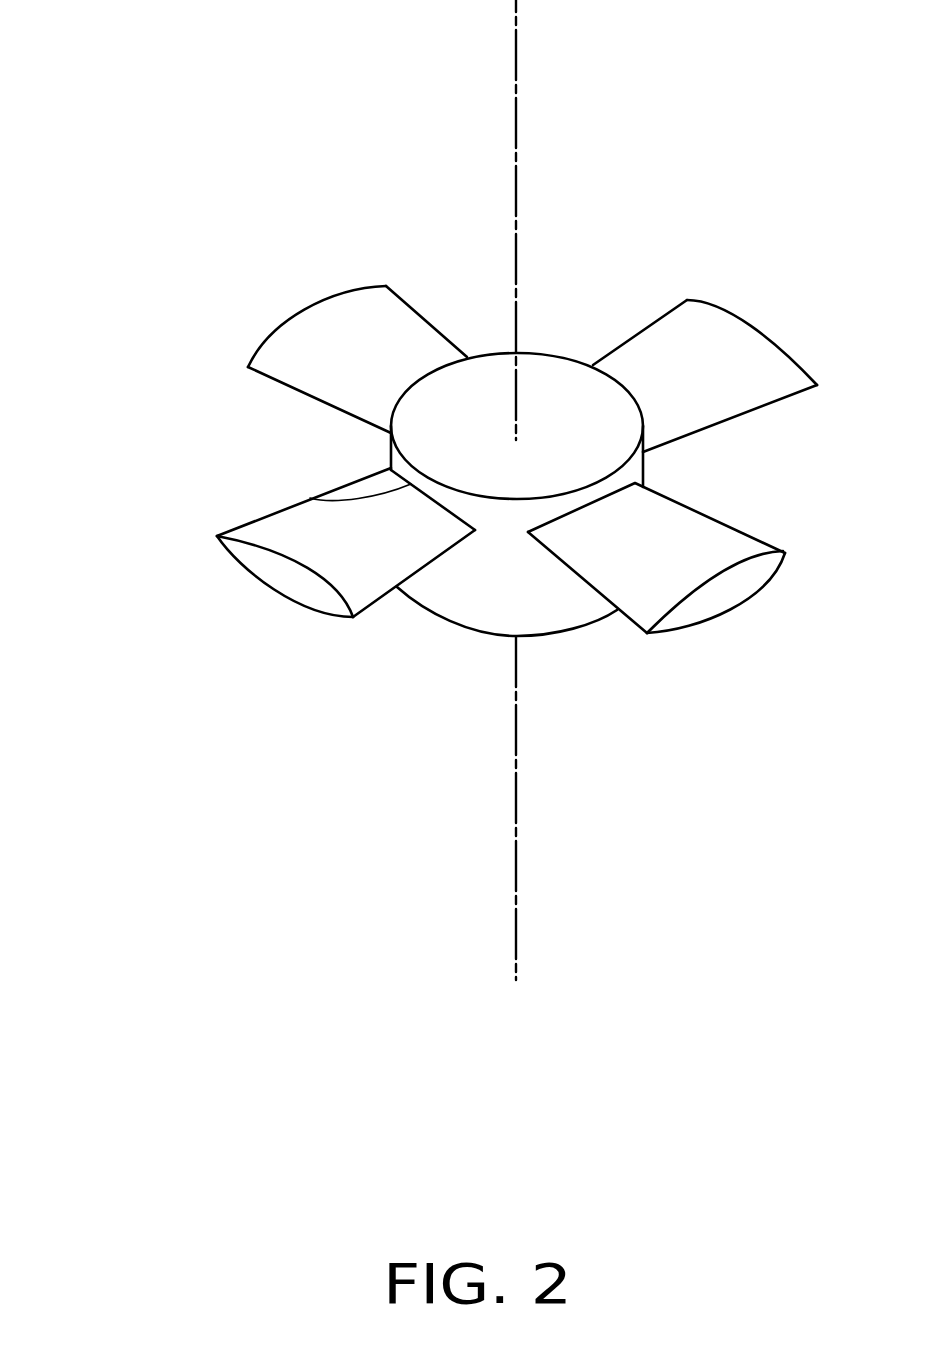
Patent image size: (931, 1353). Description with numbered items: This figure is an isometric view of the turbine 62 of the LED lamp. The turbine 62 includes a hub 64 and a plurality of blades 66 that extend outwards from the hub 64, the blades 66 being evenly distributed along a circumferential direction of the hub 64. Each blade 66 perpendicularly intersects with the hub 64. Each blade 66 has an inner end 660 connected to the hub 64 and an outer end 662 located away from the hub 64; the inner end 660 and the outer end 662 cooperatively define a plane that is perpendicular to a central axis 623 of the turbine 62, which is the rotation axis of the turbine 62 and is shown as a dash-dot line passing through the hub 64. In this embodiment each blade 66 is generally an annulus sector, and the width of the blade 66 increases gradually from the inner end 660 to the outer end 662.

The turbine 62 is at (290, 167).
The central axis 623 is at (516, 113).
The blade 66 is at (300, 337).
The inner end 660 is at (312, 499).
The outer end 662 is at (270, 563).
The hub 64 is at (485, 607).